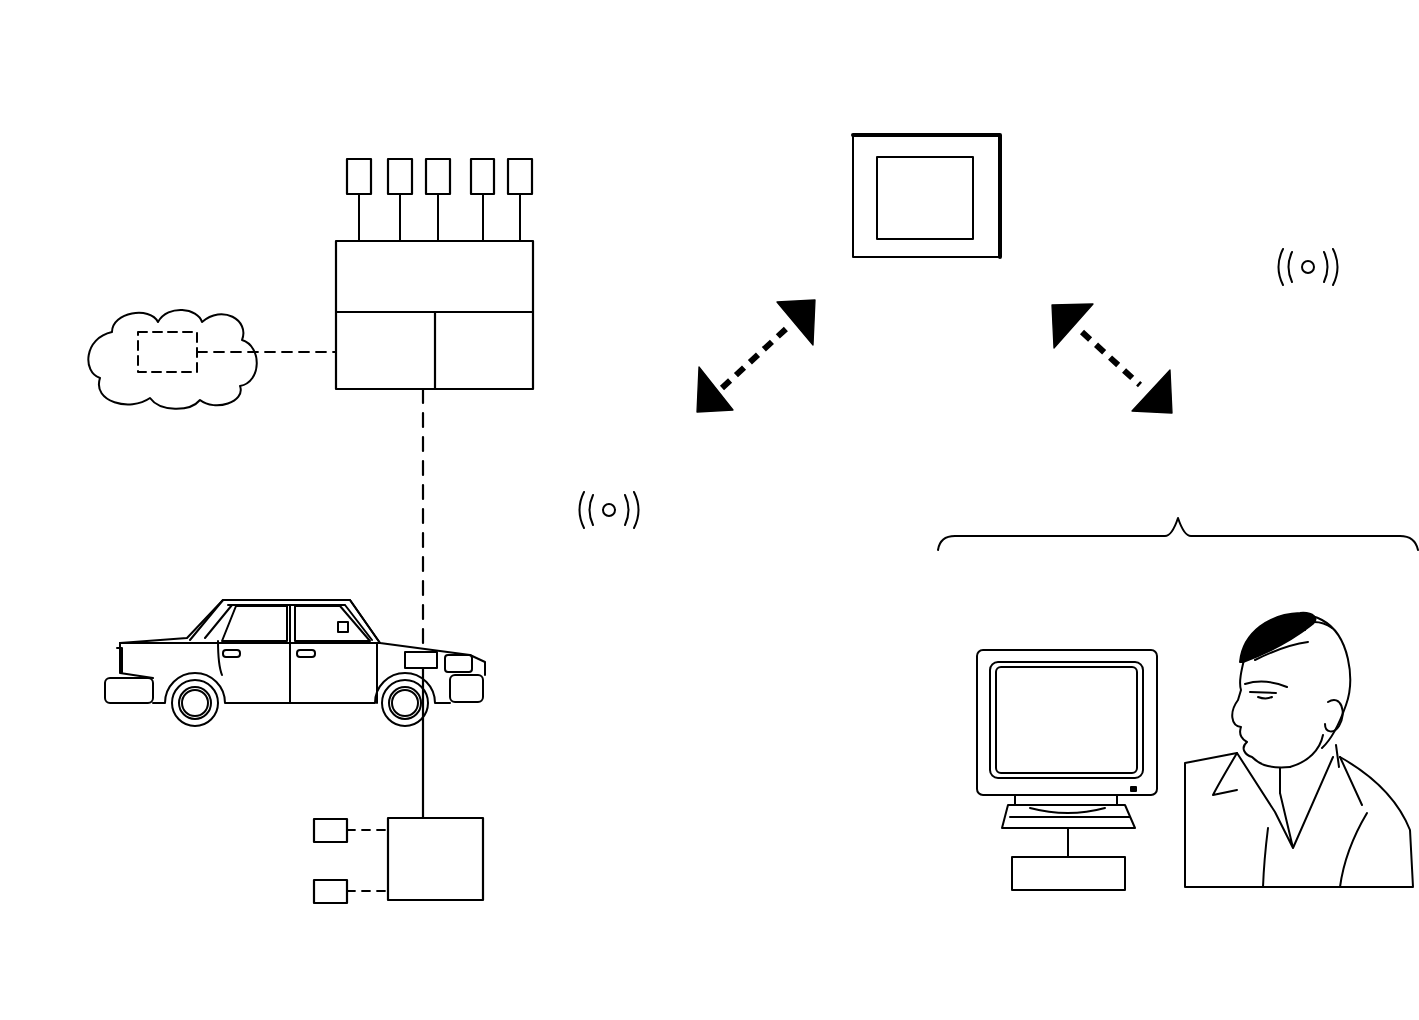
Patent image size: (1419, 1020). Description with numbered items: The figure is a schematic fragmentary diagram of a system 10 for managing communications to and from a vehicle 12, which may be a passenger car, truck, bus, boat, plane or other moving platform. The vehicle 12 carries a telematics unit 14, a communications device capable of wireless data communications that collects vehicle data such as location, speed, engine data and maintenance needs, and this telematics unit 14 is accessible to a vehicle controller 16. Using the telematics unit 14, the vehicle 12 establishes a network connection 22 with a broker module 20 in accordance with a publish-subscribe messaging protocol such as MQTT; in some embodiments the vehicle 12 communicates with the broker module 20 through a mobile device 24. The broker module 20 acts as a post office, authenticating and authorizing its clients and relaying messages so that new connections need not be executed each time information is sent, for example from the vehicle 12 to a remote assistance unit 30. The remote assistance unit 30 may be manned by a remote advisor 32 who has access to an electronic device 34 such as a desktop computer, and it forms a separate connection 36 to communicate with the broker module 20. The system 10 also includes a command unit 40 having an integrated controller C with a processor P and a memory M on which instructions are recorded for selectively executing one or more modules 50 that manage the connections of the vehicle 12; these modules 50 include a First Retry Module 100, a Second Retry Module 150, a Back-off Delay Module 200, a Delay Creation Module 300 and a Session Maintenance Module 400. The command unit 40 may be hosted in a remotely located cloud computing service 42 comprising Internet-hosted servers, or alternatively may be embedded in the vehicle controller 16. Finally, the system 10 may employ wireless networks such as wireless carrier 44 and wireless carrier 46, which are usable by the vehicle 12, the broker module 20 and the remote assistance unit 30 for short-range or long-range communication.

The system 10 is at (717, 93).
The vehicle 12 is at (203, 555).
The telematics unit 14 is at (312, 828).
The vehicle controller 16 is at (465, 818).
The broker module 20 is at (927, 110).
The network connection 22 is at (775, 382).
The mobile device 24 is at (312, 889).
The remote assistance unit 30 is at (1142, 505).
The remote advisor 32 is at (1315, 610).
The electronic device 34 is at (1017, 632).
The separate connection 36 is at (1113, 315).
The command unit 40 is at (143, 335).
The cloud computing service 42 is at (205, 300).
The wireless carrier 44 is at (591, 478).
The wireless carrier 46 is at (1333, 242).
The modules 50 is at (402, 53).
The First Retry Module 100 is at (353, 158).
The Second Retry Module 150 is at (400, 158).
The Back-off Delay Module 200 is at (442, 158).
The Delay Creation Module 300 is at (477, 158).
The Session Maintenance Module 400 is at (513, 158).